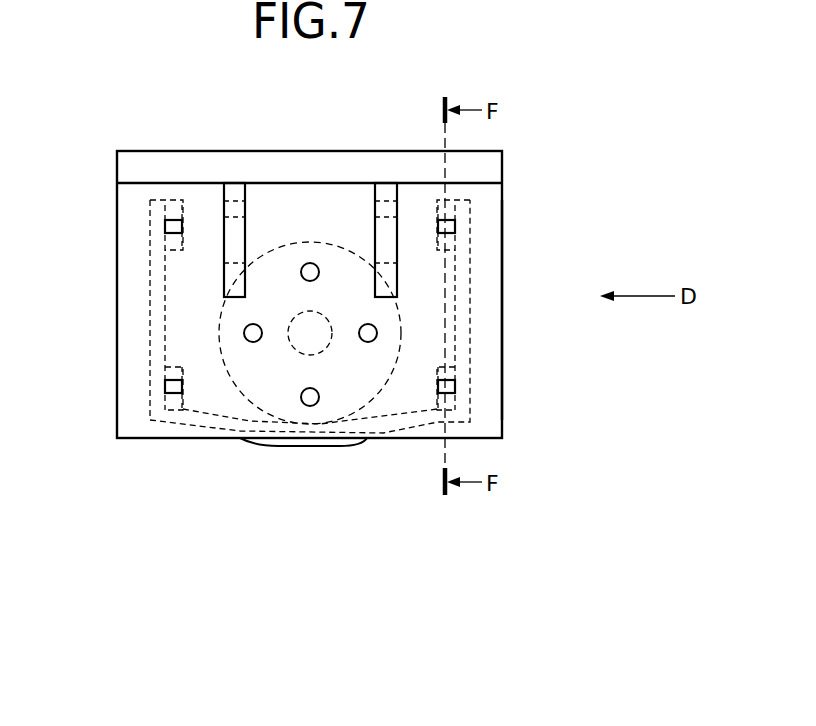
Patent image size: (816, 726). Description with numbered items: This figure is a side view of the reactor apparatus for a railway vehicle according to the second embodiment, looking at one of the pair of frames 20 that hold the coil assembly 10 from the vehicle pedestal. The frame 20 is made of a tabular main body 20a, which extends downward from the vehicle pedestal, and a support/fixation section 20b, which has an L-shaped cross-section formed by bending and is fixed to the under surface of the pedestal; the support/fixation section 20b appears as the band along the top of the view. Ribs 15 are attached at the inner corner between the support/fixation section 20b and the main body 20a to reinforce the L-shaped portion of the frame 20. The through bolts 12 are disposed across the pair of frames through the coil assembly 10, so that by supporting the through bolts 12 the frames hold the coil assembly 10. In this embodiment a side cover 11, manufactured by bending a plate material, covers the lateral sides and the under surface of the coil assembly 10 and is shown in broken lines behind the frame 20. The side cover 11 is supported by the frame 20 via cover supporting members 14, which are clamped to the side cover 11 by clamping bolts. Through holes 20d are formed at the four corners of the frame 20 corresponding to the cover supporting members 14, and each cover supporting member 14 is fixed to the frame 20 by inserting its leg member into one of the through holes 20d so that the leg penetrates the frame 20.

The coil assembly 10 is at (262, 440).
The side cover 11 is at (150, 360).
The through bolts 12 is at (377, 331).
The cover supporting member 14 is at (175, 208).
The rib 15 is at (224, 265).
The frame 20 is at (130, 323).
The main body 20a is at (487, 374).
The support/fixation section 20b is at (135, 165).
The through holes 20d is at (165, 226).